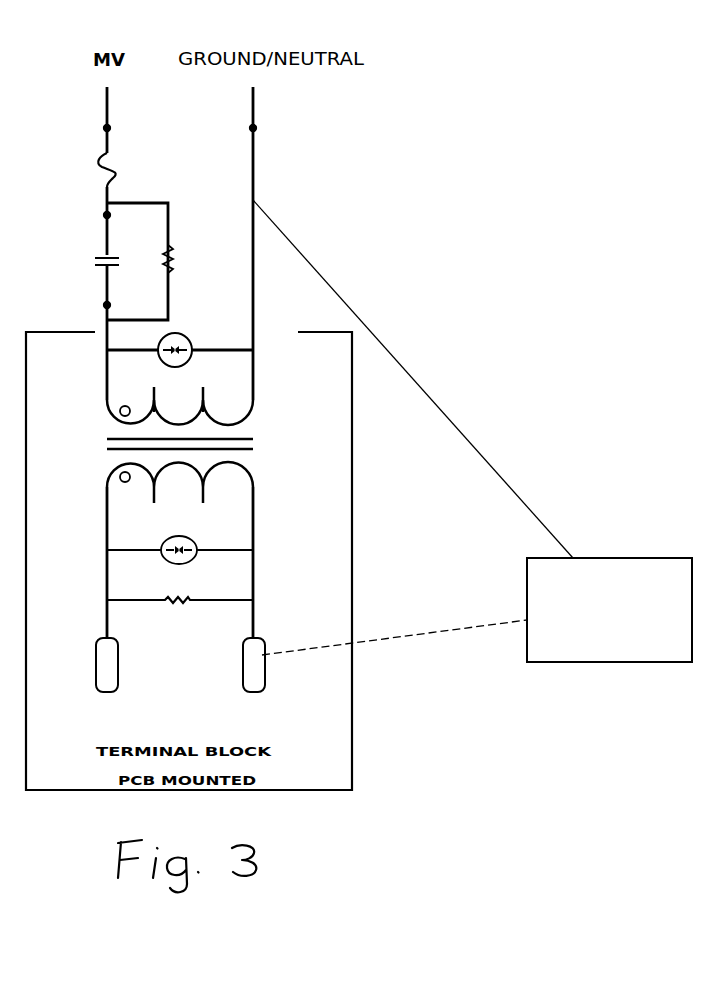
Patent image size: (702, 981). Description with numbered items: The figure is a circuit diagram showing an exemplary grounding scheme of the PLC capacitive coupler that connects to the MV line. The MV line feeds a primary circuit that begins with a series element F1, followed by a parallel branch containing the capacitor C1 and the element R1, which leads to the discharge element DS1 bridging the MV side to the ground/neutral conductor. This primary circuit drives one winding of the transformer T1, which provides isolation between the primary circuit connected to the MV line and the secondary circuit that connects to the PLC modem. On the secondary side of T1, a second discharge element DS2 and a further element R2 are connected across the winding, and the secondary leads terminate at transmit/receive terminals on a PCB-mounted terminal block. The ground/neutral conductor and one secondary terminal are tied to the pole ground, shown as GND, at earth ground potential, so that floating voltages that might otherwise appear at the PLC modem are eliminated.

The fuse F1 is at (118, 141).
The capacitor C1 is at (87, 264).
The resistor R1 is at (180, 265).
The gas discharge tube / surge arrester DS1 is at (180, 343).
The isolation transformer T1 is at (158, 449).
The gas discharge tube / surge arrester DS2 is at (180, 541).
The resistor R2 is at (180, 591).
The ground connection GND is at (472, 431).